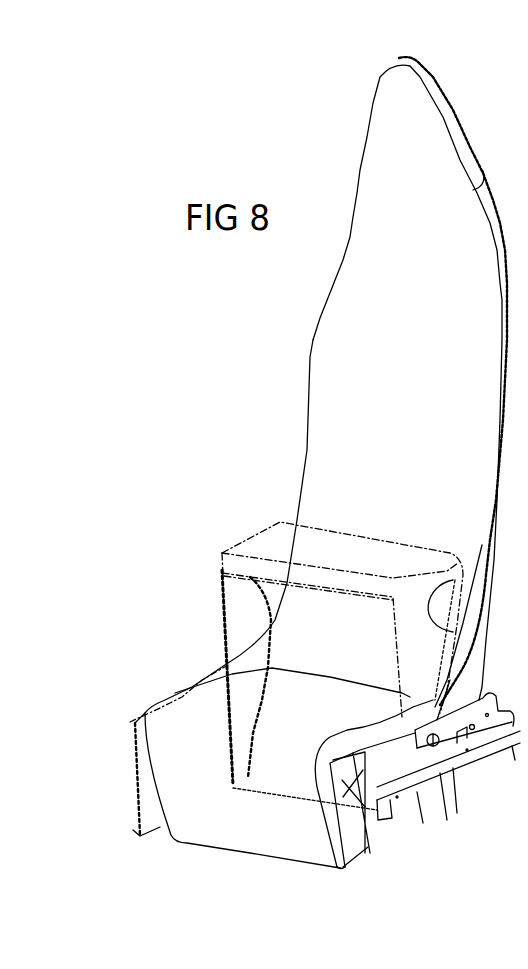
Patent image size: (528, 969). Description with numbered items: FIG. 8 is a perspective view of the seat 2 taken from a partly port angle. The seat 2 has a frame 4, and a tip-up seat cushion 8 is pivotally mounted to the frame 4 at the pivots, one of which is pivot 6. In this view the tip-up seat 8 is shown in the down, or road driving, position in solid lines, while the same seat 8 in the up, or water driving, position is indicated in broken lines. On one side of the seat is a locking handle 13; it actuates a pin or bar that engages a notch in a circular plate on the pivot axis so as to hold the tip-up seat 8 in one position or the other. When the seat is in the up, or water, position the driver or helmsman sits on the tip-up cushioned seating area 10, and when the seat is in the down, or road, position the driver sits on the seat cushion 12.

The seat 2 is at (297, 361).
The frame 4 is at (302, 452).
The tip-up seat cushion 8 is at (220, 560).
The tip-up cushioned seating area 10 is at (338, 562).
The seat cushion 12 is at (301, 726).
The locking handle 13 is at (368, 850).
The pivot 6 is at (468, 812).